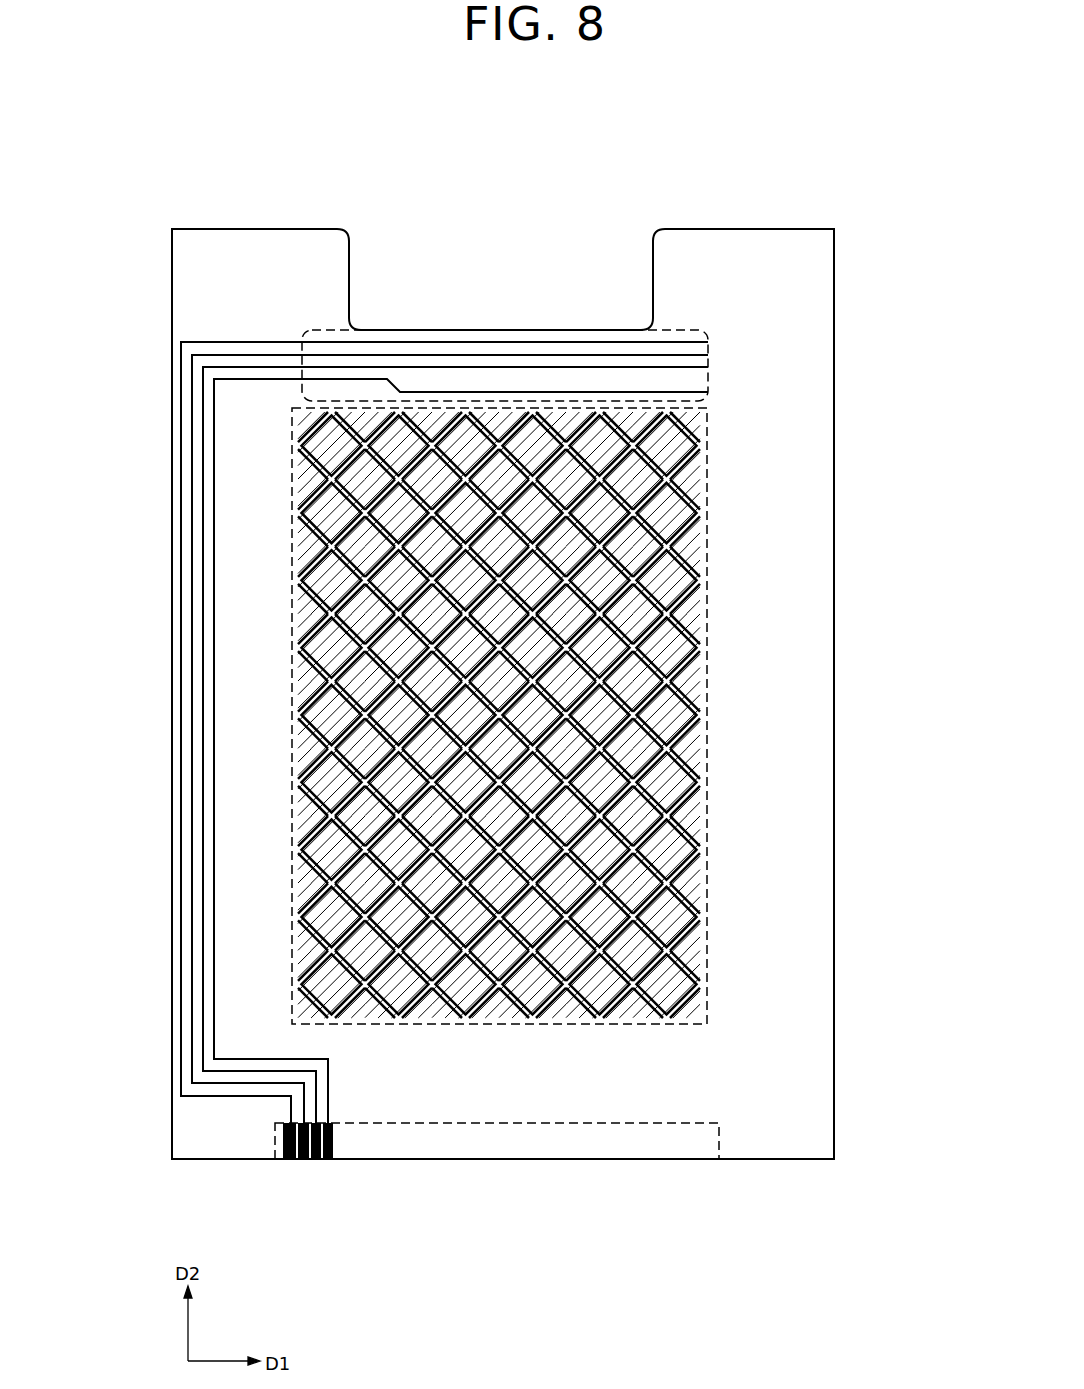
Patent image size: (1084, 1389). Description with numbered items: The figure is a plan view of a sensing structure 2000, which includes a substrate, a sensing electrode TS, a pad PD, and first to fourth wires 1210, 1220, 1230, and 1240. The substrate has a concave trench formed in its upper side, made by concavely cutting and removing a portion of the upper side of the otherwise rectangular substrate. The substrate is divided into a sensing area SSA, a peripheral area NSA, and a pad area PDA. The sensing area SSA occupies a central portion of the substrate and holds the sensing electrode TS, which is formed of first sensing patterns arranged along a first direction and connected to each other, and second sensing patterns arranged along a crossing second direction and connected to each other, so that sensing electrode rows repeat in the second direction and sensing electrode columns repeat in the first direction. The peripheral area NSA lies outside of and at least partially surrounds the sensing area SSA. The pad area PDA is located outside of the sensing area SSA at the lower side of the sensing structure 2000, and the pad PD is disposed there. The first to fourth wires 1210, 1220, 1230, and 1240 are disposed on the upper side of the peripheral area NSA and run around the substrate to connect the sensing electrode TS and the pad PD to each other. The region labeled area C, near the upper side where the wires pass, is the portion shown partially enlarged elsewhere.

The sensing structure 2000 is at (858, 205).
The first wire 1210 is at (181, 357).
The second wire 1220 is at (192, 403).
The third wire 1230 is at (203, 447).
The fourth wire 1240 is at (213, 492).
The area C is at (708, 381).
The peripheral area NSA is at (782, 512).
The sensing area SSA is at (707, 643).
The sensing electrode TS is at (690, 720).
The pad PD is at (333, 1143).
The pad area PDA is at (719, 1146).